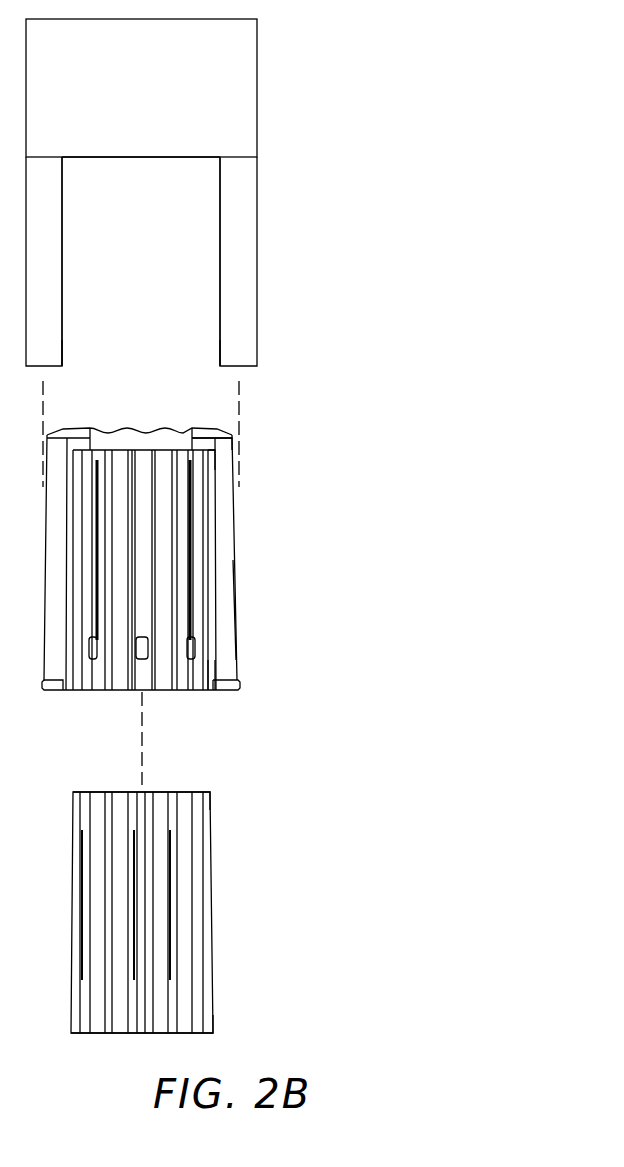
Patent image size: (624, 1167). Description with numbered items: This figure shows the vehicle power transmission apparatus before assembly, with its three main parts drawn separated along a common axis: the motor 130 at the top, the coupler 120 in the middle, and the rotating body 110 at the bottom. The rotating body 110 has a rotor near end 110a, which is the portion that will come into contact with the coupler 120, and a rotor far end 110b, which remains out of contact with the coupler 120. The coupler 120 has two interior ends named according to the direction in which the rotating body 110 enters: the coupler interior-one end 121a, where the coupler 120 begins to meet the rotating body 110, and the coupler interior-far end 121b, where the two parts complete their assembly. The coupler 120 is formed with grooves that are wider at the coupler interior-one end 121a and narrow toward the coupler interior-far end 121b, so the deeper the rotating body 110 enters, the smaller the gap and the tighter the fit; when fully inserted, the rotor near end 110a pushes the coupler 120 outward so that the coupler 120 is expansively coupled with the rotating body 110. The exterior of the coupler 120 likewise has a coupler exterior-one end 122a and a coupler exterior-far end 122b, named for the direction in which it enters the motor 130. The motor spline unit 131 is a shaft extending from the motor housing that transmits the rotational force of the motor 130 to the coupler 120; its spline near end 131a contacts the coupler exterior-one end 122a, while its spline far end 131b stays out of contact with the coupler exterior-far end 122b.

The rotating body 110 is at (245, 903).
The rotor near end 110a is at (207, 803).
The rotor far end 110b is at (207, 1023).
The coupler 120 is at (285, 527).
The coupler interior-one end 121a is at (210, 677).
The coupler interior-far end 121b is at (210, 452).
The coupler exterior-one end 122a is at (228, 610).
The coupler exterior-far end 122b is at (228, 445).
The motor 130 is at (318, 121).
The motor spline unit 131 is at (226, 262).
The spline near end 131a is at (228, 351).
The spline far end 131b is at (228, 181).